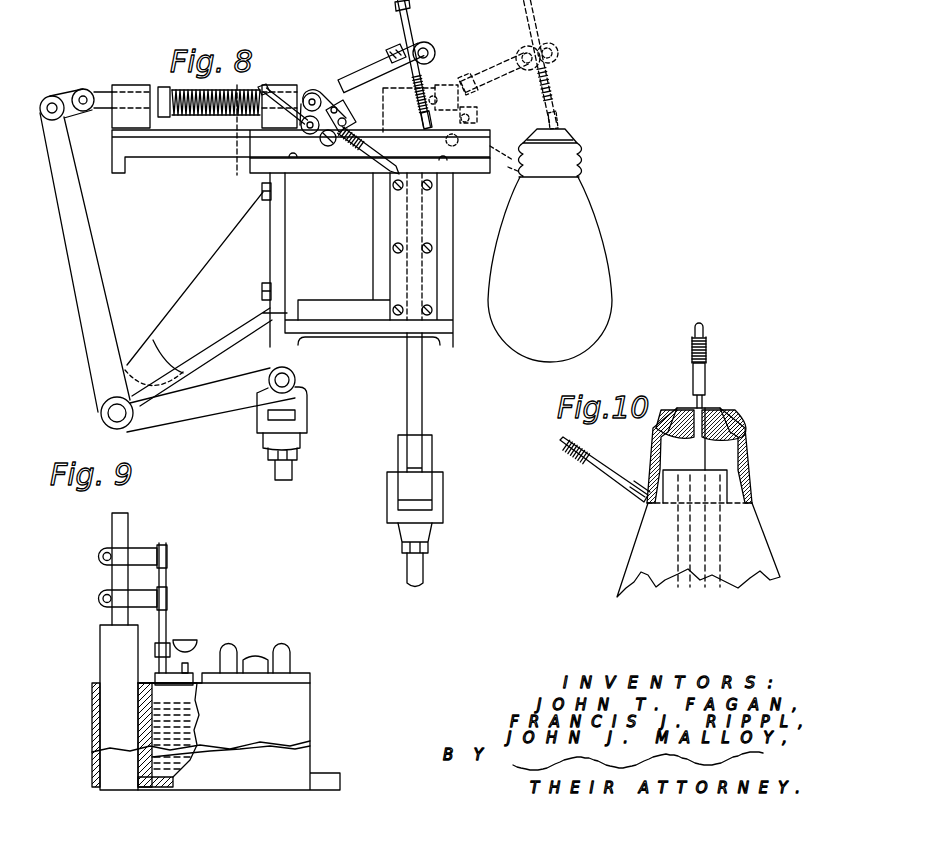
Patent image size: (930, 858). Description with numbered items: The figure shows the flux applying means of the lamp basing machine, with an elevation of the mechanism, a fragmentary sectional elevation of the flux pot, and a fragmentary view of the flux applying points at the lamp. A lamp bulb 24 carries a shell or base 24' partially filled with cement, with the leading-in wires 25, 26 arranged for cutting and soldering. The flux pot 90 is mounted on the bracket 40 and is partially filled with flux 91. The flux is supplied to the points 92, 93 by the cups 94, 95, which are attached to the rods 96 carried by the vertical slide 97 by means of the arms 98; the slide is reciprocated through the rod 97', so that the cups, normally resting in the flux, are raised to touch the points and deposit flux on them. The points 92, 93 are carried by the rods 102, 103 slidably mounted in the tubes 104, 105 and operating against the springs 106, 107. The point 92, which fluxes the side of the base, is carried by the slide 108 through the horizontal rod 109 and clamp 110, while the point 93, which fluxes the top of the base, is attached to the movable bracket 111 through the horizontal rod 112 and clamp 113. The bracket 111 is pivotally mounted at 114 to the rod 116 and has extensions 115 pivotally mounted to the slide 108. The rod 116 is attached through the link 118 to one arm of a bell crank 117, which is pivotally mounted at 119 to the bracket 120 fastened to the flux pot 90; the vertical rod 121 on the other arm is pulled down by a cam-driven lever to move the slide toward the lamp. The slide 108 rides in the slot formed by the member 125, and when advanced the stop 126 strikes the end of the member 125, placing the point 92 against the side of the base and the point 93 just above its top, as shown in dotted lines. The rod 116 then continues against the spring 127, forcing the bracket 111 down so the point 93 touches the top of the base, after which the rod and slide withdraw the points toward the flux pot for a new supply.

In FIG. 8, the lamp bulb 24 is at (550, 269).
In FIG. 10, the lamp bulb 24 is at (705, 536).
In FIG. 8, the shell or base 24' is at (562, 153).
In FIG. 10, the shell or base 24' is at (714, 455).
In FIG. 10, the leading-in wire 25 is at (706, 461).
In FIG. 10, the leading-in wire 26 is at (670, 468).
In FIG. 8, the bracket 40 is at (346, 333).
In FIG. 8, the flux pot 90 is at (361, 260).
In FIG. 9, the flux pot 90 is at (311, 704).
In FIG. 9, the flux 91 is at (198, 704).
In FIG. 8, the point 92 is at (403, 157).
In FIG. 10, the point 92 is at (637, 500).
In FIG. 8, the point 93 is at (420, 126).
In FIG. 10, the point 93 is at (706, 401).
In FIG. 9, the cup 94 is at (188, 662).
In FIG. 9, the cup 95 is at (186, 638).
In FIG. 9, the rod 96 is at (168, 583).
In FIG. 8, the vertical slide 97 is at (425, 443).
In FIG. 9, the vertical slide 97 is at (116, 648).
In FIG. 8, the rod 97' is at (441, 570).
In FIG. 9, the arm 98 is at (142, 549).
In FIG. 8, the rod 102 is at (357, 142).
In FIG. 10, the rod 102 is at (558, 450).
In FIG. 8, the rod 103 is at (417, 80).
In FIG. 10, the rod 103 is at (705, 328).
In FIG. 8, the tube 104 is at (284, 93).
In FIG. 8, the tube 105 is at (402, 20).
In FIG. 8, the spring 106 is at (356, 137).
In FIG. 10, the spring 106 is at (582, 459).
In FIG. 8, the spring 107 is at (425, 92).
In FIG. 10, the spring 107 is at (706, 360).
In FIG. 8, the slide 108 is at (198, 153).
In FIG. 8, the horizontal rod 109 is at (349, 117).
In FIG. 8, the clamp 110 is at (321, 144).
In FIG. 8, the movable bracket 111 is at (368, 68).
In FIG. 8, the horizontal rod 112 is at (426, 46).
In FIG. 8, the clamp 113 is at (432, 52).
In FIG. 8, the pivot 114 is at (313, 93).
In FIG. 8, the extension 115 is at (304, 132).
In FIG. 8, the rod 116 is at (98, 90).
In FIG. 8, the bell crank 117 is at (75, 170).
In FIG. 8, the link 118 is at (58, 93).
In FIG. 8, the pivot 119 is at (108, 422).
In FIG. 8, the bracket 120 is at (228, 338).
In FIG. 8, the vertical rod 121 is at (288, 478).
In FIG. 8, the member 125 is at (268, 172).
In FIG. 9, the member 125 is at (270, 655).
In FIG. 8, the stop 126 is at (120, 174).
In FIG. 8, the spring 127 is at (183, 96).